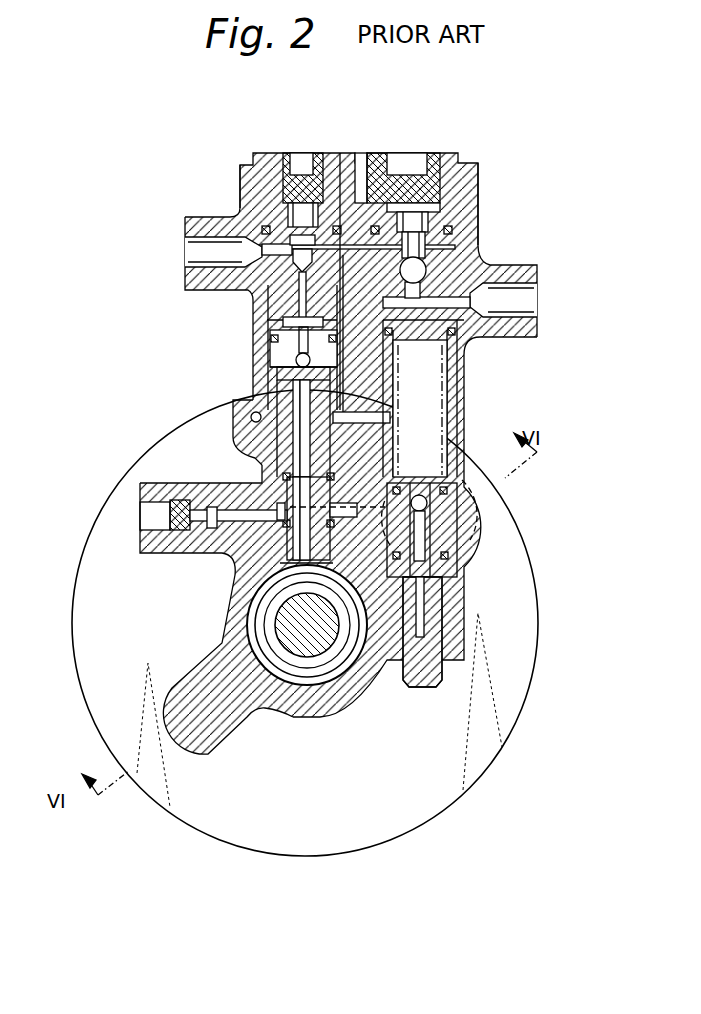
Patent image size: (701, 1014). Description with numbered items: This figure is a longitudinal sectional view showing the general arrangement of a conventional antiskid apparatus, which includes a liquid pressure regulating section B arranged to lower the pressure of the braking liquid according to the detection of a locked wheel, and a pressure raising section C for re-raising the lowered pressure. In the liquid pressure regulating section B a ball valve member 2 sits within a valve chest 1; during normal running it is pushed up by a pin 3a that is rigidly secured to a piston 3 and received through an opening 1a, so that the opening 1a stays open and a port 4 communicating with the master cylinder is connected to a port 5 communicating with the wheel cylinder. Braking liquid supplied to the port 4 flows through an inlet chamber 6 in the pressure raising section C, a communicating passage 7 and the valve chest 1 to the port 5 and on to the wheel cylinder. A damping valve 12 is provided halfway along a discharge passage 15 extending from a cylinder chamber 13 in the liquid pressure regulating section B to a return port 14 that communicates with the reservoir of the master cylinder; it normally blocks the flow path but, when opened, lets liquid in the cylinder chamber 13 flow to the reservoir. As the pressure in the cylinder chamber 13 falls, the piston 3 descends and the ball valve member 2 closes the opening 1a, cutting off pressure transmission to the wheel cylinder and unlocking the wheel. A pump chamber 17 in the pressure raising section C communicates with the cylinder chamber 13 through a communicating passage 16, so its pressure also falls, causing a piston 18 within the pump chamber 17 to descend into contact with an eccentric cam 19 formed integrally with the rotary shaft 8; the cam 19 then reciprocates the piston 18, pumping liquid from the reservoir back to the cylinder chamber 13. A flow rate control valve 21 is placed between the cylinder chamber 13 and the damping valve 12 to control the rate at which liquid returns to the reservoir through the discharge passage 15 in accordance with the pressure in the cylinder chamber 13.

The valve chest 1 is at (380, 242).
The opening 1a is at (440, 270).
The ball valve member 2 is at (450, 268).
The piston 3 is at (443, 347).
The pin 3a is at (473, 330).
The port 4 is at (195, 249).
The port 5 is at (530, 300).
The inlet chamber 6 is at (325, 243).
The communicating passage 7 is at (357, 252).
The rotary shaft 8 is at (317, 650).
The damping valve 12 is at (478, 515).
The cylinder chamber 13 is at (427, 397).
The return port 14 is at (147, 520).
The discharge passage 15 is at (220, 555).
The communicating passage 16 is at (352, 420).
The pump chamber 17 is at (280, 375).
The piston 18 is at (255, 444).
The eccentric cam 19 is at (287, 677).
The flow rate control valve 21 is at (445, 555).
The liquid pressure regulating section B is at (492, 190).
The pressure raising section C is at (234, 188).